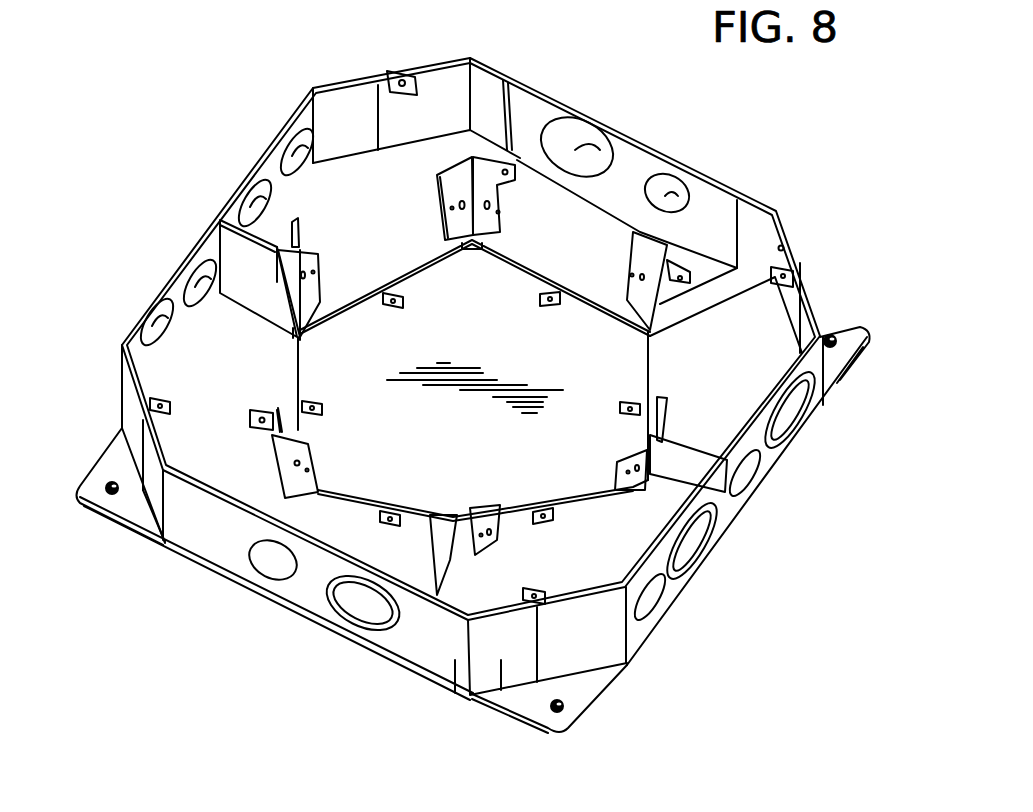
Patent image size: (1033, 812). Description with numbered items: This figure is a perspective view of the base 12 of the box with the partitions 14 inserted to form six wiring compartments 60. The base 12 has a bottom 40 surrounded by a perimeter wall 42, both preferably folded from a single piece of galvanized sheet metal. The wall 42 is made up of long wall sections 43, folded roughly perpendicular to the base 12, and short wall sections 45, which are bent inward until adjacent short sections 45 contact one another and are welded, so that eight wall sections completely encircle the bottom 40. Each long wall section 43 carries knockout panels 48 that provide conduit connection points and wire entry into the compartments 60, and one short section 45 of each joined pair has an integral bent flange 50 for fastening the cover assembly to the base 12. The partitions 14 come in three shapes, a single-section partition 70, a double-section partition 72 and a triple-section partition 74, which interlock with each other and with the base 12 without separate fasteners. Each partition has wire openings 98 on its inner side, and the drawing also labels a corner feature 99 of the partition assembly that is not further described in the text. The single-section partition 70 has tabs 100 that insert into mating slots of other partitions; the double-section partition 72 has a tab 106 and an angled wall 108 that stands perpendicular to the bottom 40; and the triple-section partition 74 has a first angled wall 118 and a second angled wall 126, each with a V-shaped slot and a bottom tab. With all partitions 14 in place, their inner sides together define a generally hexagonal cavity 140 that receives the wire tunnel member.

The base 12 is at (96, 457).
The partitions 14 is at (238, 262).
The bottom 40 is at (744, 386).
The perimeter wall 42 is at (758, 191).
The long wall sections 43 is at (192, 245).
The short wall sections 45 is at (427, 72).
The knockout panels 48 is at (292, 146).
The bent flange 50 is at (455, 693).
The wire connection compartments 60 is at (196, 380).
The single-section partition 70 is at (627, 283).
The double-section partition 72 is at (300, 375).
The triple-section partition 74 is at (420, 285).
The wire openings 98 is at (302, 320).
The corner bracket flanges 99 is at (437, 210).
The tabs 100 is at (252, 425).
The tab 106 is at (300, 222).
The angled wall 108 is at (717, 228).
The first angled wall 118 is at (257, 300).
The second angled wall 126 is at (505, 123).
The hexagonal cavity 140 is at (602, 362).